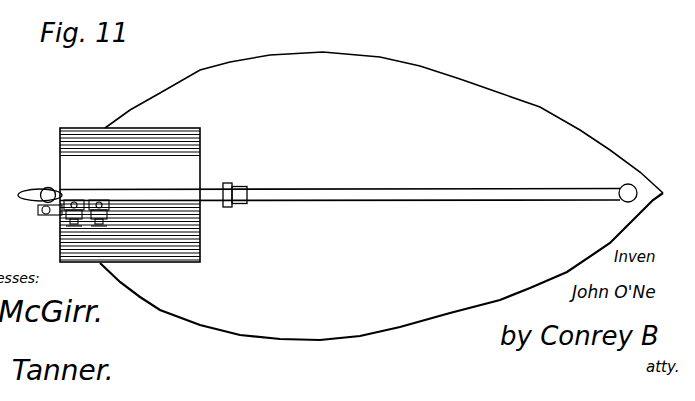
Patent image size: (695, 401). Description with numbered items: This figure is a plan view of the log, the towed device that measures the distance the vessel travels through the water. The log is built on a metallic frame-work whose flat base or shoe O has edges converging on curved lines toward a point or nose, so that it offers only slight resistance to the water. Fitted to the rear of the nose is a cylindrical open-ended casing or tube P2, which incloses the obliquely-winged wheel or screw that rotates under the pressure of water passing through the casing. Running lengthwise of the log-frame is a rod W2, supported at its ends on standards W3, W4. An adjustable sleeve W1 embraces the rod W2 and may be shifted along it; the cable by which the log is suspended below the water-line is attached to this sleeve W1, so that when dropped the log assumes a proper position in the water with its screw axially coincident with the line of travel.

The flat base or shoe O is at (381, 196).
The cylindrical open-ended casing or tube P2 is at (130, 195).
The rod W2 is at (330, 177).
The standard W4 is at (42, 189).
The adjustable sleeve W1 is at (239, 185).
The standard W3 is at (632, 184).